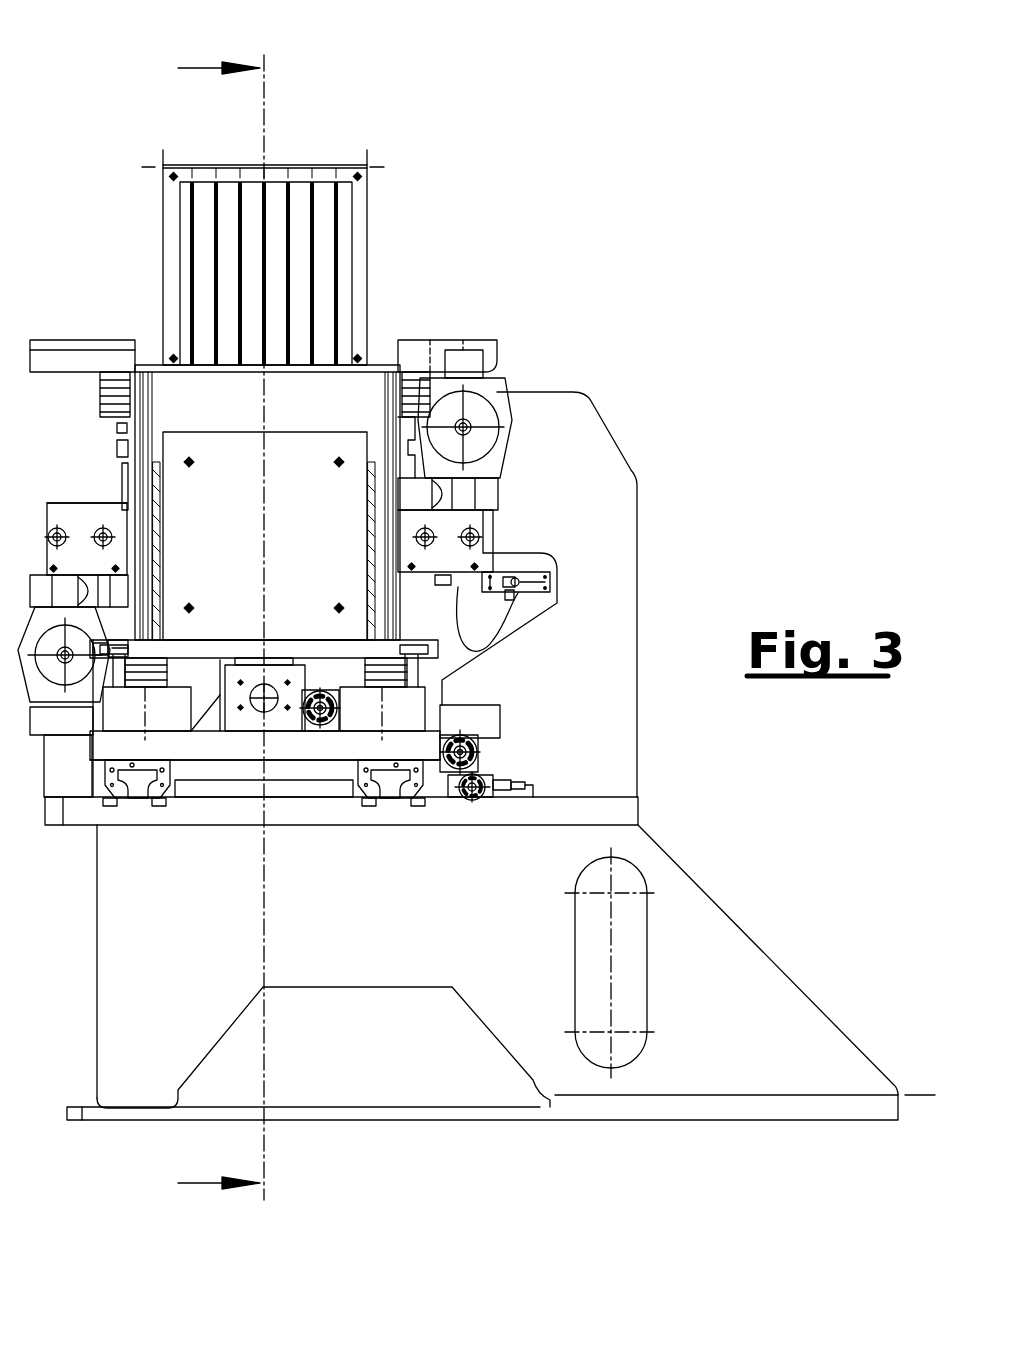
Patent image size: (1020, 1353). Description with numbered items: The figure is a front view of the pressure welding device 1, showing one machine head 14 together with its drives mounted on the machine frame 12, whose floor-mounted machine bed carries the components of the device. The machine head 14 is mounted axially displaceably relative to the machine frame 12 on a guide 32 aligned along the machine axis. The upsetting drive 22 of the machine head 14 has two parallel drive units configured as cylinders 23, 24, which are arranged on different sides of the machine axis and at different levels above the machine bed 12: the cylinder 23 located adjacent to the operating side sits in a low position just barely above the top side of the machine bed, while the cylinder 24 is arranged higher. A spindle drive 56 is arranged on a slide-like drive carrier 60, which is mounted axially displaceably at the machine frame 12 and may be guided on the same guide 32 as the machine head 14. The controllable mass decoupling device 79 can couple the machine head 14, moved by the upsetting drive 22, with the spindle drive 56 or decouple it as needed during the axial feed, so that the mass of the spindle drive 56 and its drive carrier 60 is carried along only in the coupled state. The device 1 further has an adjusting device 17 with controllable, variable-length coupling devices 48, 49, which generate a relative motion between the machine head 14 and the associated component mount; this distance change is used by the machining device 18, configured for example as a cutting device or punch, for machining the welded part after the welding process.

The pressure welding device 1 is at (730, 318).
The machine frame 12 is at (727, 1000).
The machine head 14 is at (485, 523).
The adjusting device 17 is at (548, 712).
The machining device 18 is at (182, 207).
The upsetting drive 22 is at (524, 355).
The cylinder 23 is at (53, 677).
The cylinder 24 is at (452, 410).
The guide 32 is at (130, 777).
The coupling device 48 is at (470, 798).
The coupling device 49 is at (467, 737).
The spindle drive 56 is at (210, 423).
The drive carrier 60 is at (247, 747).
The mass decoupling device 79 is at (328, 733).